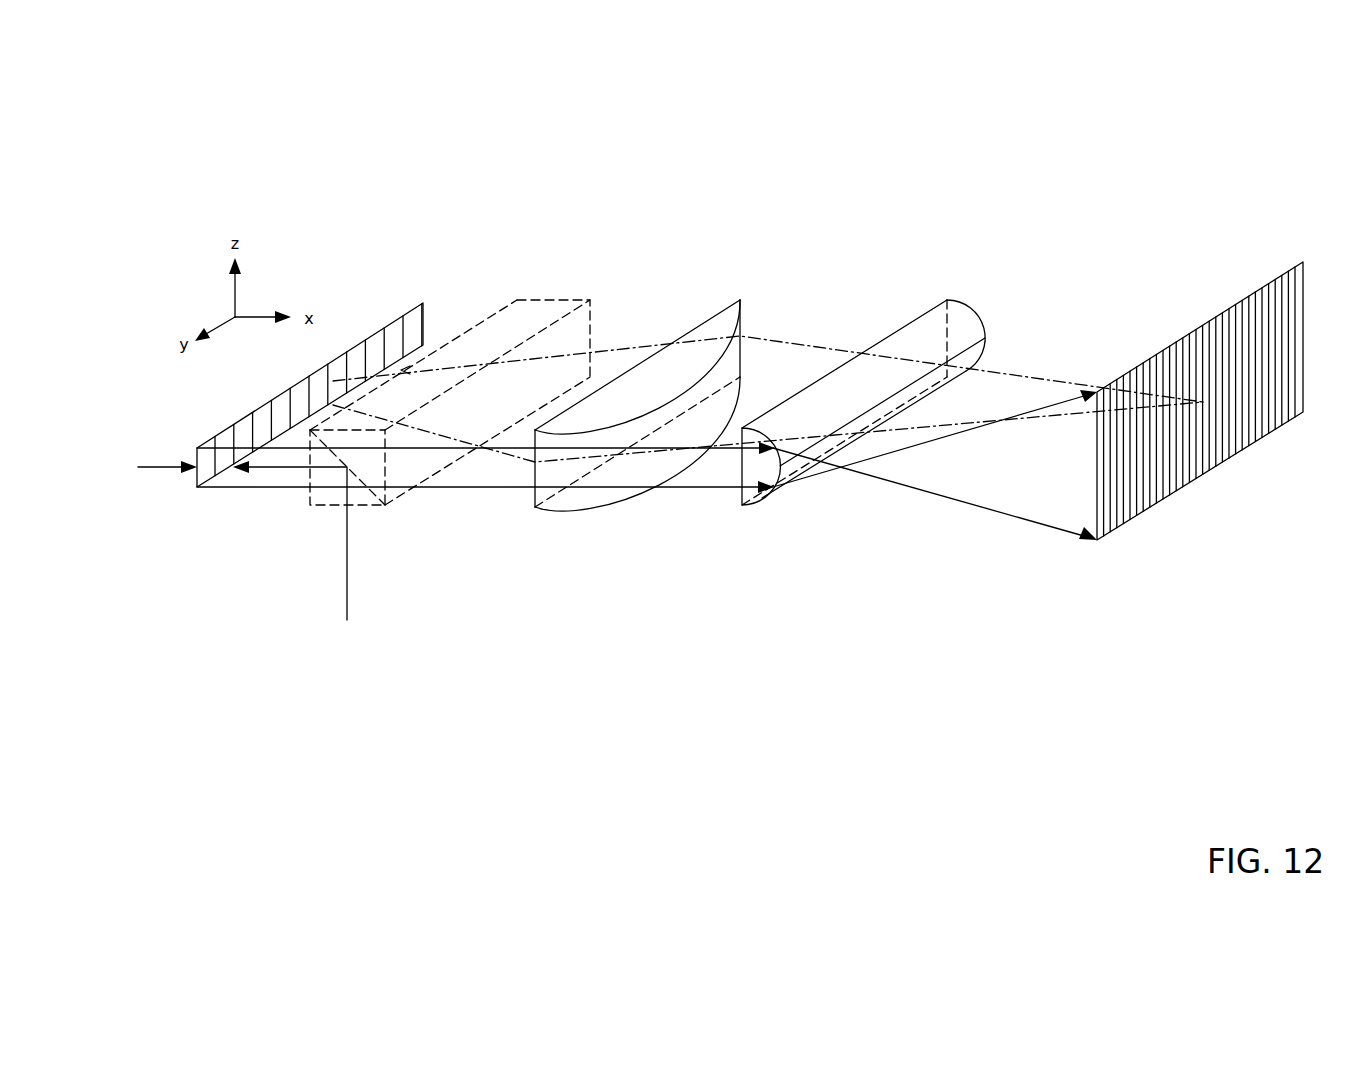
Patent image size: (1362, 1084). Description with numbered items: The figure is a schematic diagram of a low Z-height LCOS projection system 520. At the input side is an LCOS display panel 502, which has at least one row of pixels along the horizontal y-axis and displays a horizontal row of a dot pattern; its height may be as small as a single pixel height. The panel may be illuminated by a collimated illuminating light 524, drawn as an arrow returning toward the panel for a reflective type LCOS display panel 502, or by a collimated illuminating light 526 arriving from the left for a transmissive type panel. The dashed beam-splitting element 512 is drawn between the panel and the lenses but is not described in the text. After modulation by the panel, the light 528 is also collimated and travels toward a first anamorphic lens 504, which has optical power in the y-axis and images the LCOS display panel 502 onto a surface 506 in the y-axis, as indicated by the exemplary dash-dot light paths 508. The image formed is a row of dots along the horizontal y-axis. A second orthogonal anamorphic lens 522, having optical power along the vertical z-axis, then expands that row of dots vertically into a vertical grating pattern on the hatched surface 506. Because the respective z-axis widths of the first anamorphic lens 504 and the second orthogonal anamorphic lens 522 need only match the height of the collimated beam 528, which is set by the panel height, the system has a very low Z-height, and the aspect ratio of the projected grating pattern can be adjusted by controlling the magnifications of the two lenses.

The low Z-height LCOS projection system 520 is at (382, 190).
The LCOS display panel 502 is at (423, 303).
The beam splitter 512 is at (577, 297).
The first anamorphic lens 504 is at (742, 299).
The light paths 508 is at (793, 340).
The second orthogonal anamorphic lens 522 is at (948, 299).
The surface 506 is at (1303, 262).
The illuminating light 526 is at (167, 450).
The illuminating light 524 is at (318, 540).
The light 528 is at (667, 487).